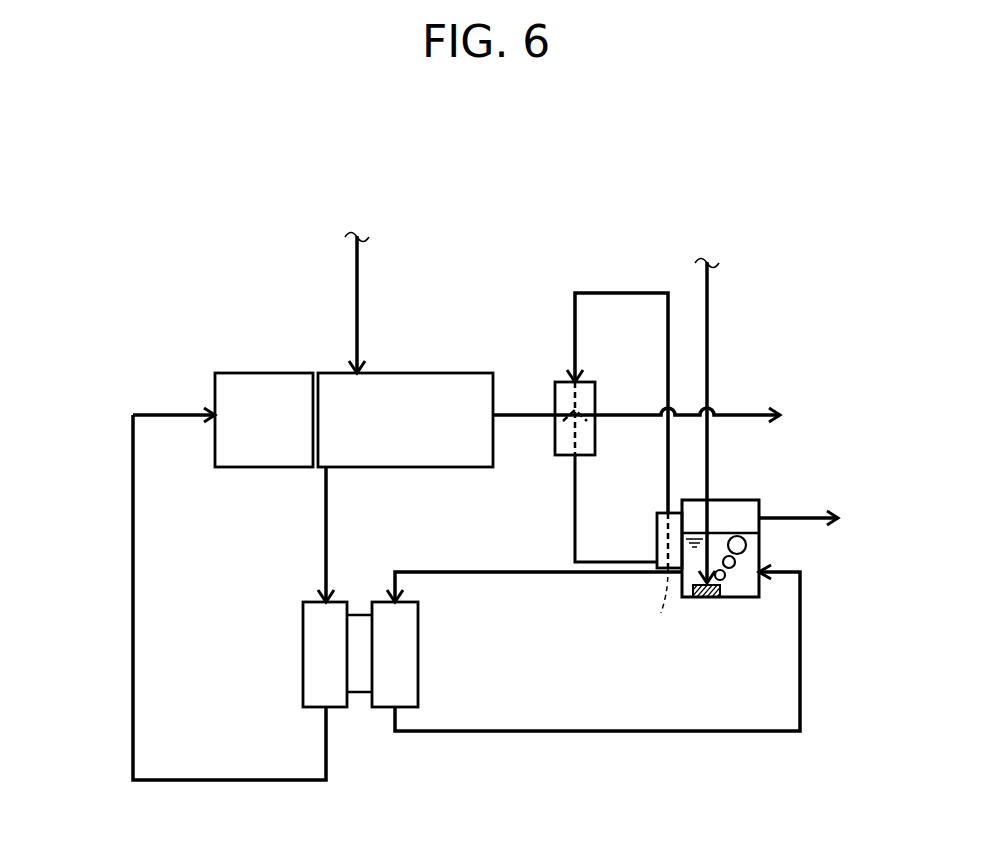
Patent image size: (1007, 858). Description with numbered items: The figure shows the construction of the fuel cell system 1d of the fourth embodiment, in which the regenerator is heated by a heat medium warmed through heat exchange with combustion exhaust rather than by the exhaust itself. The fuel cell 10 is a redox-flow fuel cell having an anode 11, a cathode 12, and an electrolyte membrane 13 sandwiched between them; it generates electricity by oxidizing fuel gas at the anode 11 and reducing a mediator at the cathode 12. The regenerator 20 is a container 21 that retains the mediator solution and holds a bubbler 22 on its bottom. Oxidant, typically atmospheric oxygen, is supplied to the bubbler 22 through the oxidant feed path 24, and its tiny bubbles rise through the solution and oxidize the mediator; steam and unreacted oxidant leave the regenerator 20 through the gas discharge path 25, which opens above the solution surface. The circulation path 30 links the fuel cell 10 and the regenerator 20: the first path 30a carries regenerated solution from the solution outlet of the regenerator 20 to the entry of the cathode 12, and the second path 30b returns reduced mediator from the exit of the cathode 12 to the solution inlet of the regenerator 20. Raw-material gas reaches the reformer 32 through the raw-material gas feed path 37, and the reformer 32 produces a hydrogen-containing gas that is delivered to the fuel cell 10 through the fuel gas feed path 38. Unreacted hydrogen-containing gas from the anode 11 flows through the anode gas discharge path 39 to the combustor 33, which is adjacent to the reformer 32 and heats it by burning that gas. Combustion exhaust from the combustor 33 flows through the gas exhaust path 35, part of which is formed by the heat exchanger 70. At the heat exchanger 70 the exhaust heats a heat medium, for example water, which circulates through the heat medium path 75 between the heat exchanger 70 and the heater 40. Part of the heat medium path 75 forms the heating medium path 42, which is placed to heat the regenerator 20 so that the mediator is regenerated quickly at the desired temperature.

The fuel cell system 1d is at (750, 196).
The fuel cell 10 is at (352, 682).
The anode 11 is at (320, 680).
The cathode 12 is at (400, 648).
The electrolyte membrane 13 is at (353, 685).
The regenerator 20 is at (717, 609).
The container 21 is at (742, 598).
The bubbler 22 is at (703, 627).
The oxidant feed path 24 is at (711, 287).
The gas discharge path 25 is at (798, 513).
The circulation path 30 is at (593, 609).
The first path 30a is at (435, 572).
The second path 30b is at (560, 731).
The reformer 32 is at (407, 373).
The combustor 33 is at (258, 373).
The gas exhaust path 35 is at (527, 410).
The raw-material gas feed path 37 is at (357, 268).
The fuel gas feed path 38 is at (326, 523).
The anode gas discharge path 39 is at (133, 594).
The heater 40 is at (657, 514).
The heating medium path 42 is at (666, 605).
The heat exchanger 70 is at (561, 440).
The heat medium path 75 is at (620, 293).